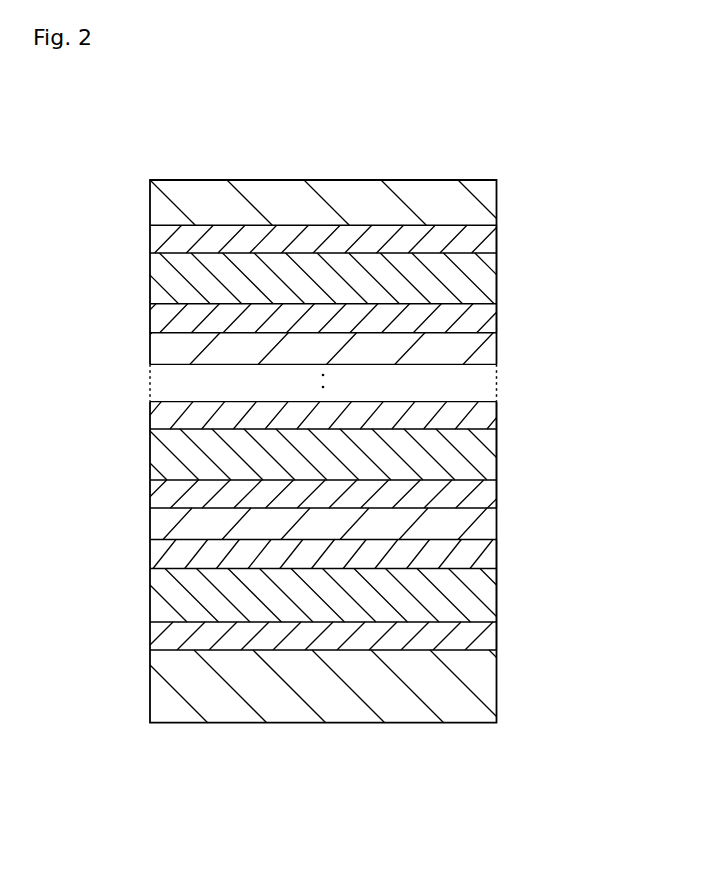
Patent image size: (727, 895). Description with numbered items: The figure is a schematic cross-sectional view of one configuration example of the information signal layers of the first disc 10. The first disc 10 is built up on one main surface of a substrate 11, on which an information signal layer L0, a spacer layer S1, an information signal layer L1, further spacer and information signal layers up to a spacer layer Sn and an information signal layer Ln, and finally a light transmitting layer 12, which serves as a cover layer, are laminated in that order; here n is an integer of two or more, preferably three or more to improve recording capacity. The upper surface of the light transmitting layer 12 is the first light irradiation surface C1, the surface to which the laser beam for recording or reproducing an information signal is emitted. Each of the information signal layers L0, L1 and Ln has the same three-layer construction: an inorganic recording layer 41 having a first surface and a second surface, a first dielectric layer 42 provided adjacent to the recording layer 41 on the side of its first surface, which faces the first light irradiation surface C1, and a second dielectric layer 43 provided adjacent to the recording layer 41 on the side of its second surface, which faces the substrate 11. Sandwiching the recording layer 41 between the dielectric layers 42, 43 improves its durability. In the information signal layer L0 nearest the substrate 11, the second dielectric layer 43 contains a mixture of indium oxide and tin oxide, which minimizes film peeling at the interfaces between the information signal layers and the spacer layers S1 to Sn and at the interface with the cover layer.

The first disc 10 is at (211, 160).
The substrate 11 is at (487, 686).
The light transmitting layer 12 is at (484, 200).
The recording layer 41 is at (487, 278).
The first dielectric layer 42 is at (487, 236).
The second dielectric layer 43 is at (486, 317).
The spacer layer Sn is at (488, 347).
The spacer layer S1 is at (487, 521).
The information signal layer Ln is at (577, 230).
The information signal layer L1 is at (577, 405).
The information signal layer L0 is at (577, 545).
The first light irradiation surface C1 is at (461, 176).